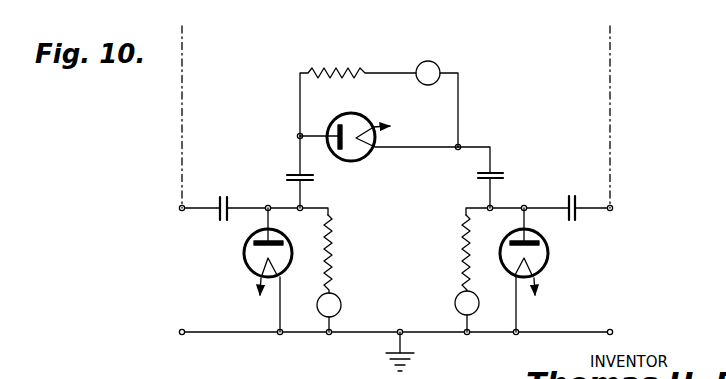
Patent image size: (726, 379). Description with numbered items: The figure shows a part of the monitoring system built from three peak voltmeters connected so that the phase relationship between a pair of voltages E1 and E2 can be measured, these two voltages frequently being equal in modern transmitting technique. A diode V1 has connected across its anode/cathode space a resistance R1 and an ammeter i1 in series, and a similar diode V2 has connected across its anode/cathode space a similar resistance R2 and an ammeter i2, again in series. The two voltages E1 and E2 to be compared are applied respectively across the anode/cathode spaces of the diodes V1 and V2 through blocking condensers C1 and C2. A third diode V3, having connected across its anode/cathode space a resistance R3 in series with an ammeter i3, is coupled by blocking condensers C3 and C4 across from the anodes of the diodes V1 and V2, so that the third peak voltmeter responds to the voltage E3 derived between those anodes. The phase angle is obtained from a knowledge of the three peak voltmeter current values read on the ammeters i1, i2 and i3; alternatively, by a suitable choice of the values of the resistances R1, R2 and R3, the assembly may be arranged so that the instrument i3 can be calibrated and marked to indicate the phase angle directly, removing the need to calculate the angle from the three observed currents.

The blocking condenser C1 is at (218, 196).
The blocking condenser C2 is at (576, 194).
The blocking condenser C3 is at (288, 170).
The blocking condenser C4 is at (506, 175).
The resistance R1 is at (335, 247).
The resistance R2 is at (460, 254).
The resistance R3 is at (342, 66).
The diode V1 is at (252, 272).
The diode V2 is at (543, 270).
The third diode V3 is at (366, 158).
The ammeter i1 is at (341, 305).
The ammeter i2 is at (455, 303).
The ammeter i3 is at (431, 86).
The voltage E1 is at (182, 211).
The voltage E2 is at (610, 211).
The voltage E3 is at (610, 35).